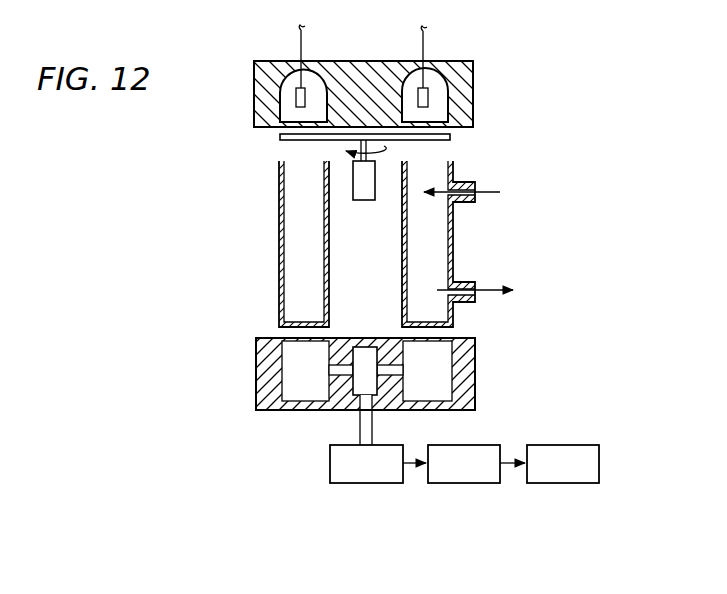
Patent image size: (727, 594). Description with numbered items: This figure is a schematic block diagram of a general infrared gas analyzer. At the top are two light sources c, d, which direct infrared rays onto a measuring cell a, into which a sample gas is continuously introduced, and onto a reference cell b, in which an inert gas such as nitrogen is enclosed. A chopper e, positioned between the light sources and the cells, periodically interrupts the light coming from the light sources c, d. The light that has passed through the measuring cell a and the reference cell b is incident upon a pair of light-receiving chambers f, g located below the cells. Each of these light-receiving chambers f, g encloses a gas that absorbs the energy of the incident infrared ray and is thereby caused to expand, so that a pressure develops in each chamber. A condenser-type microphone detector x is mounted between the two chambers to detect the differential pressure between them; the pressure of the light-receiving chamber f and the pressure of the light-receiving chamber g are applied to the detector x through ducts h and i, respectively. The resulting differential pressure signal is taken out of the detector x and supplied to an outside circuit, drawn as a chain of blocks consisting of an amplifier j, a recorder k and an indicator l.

The measuring cell a is at (455, 250).
The reference cell b is at (279, 245).
The light source c is at (445, 104).
The light source d is at (283, 100).
The chopper e is at (290, 141).
The light-receiving chamber f is at (445, 370).
The light-receiving chamber g is at (300, 370).
The duct h is at (390, 370).
The duct i is at (347, 370).
The amplifier j is at (348, 484).
The recorder k is at (448, 484).
The indicator l is at (548, 484).
The condenser-type microphone detector x is at (360, 382).